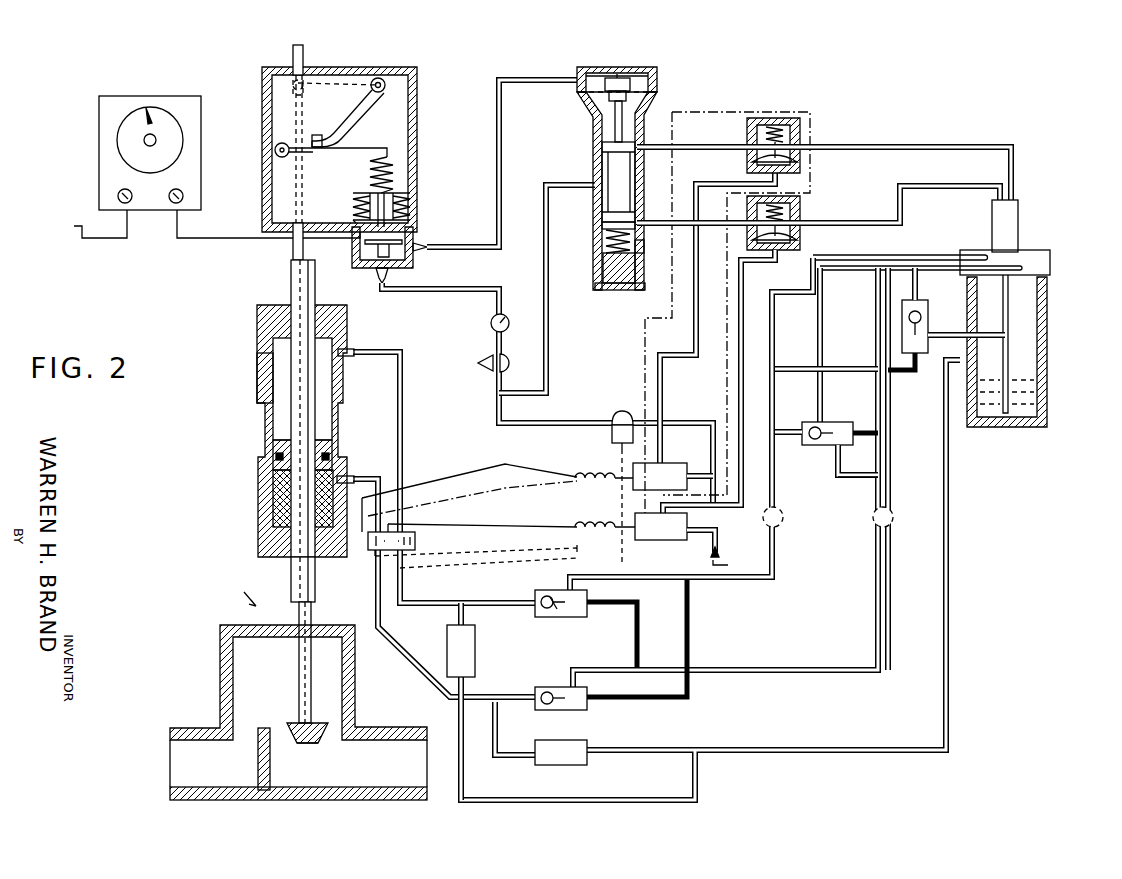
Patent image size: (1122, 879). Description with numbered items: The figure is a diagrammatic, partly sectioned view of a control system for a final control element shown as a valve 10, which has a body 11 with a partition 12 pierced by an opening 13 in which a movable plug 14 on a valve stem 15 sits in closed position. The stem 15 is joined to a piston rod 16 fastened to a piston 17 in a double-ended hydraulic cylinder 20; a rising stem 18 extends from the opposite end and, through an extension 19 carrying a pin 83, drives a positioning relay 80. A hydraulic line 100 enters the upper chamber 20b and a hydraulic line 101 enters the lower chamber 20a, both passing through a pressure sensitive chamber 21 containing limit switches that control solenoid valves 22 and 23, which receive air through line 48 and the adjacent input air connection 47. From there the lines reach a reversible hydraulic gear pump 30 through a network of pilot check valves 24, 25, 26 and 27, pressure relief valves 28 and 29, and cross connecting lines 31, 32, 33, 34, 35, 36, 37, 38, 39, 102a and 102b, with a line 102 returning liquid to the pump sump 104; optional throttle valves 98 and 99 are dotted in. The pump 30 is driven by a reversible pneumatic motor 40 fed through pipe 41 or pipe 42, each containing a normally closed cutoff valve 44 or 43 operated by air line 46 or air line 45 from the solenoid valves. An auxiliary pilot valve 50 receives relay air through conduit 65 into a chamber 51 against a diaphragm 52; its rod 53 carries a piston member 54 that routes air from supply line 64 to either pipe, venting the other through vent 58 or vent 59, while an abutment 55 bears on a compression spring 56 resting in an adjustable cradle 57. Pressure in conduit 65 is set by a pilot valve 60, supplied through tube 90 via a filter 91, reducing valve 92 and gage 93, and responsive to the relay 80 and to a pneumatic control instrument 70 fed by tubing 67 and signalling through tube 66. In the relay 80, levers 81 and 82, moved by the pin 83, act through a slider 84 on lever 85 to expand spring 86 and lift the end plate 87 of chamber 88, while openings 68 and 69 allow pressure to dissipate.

The valve 10 is at (242, 591).
The body 11 is at (220, 630).
The partition 12 is at (264, 730).
The opening 13 is at (318, 742).
The movable plug 14 is at (305, 744).
The valve stem 15 is at (311, 624).
The piston rod 16 is at (315, 586).
The piston 17 is at (275, 450).
The rising stem 18 is at (291, 285).
The extension 19 is at (293, 254).
The hydraulic cylinder 20 is at (249, 327).
The lower cylinder chamber 20a is at (275, 478).
The upper cylinder chamber 20b is at (263, 378).
The pressure sensitive chamber 21 is at (416, 540).
The solenoid valve 22 is at (640, 541).
The solenoid valve 23 is at (612, 474).
The pilot check valve 24 is at (806, 424).
The pilot check valve 25 is at (906, 302).
The pilot check valve 26 is at (562, 618).
The pilot check valve 27 is at (542, 710).
The pressure relief valve 28 is at (447, 641).
The pressure relief valve 29 is at (535, 762).
The reversible hydraulic gear pump 30 is at (1050, 264).
The cross connecting line 31 is at (918, 286).
The cross connecting line 32 is at (938, 335).
The cross connecting line 33 is at (830, 369).
The cross connecting line 34 is at (788, 437).
The cross connecting line 35 is at (858, 460).
The cross connecting line 36 is at (850, 478).
The cross connecting line 37 is at (690, 600).
The cross connecting line 38 is at (640, 629).
The cross connecting line 39 is at (466, 621).
The reversible pneumatic motor 40 is at (1018, 222).
The pipe 41 is at (857, 145).
The pipe 42 is at (848, 222).
The cutoff valve 43 is at (800, 205).
The cutoff valve 44 is at (800, 123).
The air line 45 is at (738, 375).
The air line 46 is at (668, 462).
The air inlet line 47 is at (697, 532).
The line 48 is at (703, 473).
The auxiliary pilot valve 50 is at (593, 132).
The chamber 51 is at (592, 72).
The diaphragm 52 is at (632, 78).
The rod 53 is at (623, 120).
The piston member 54 is at (628, 184).
The abutment 55 is at (602, 232).
The compression spring 56 is at (604, 246).
The adjustable cradle 57 is at (603, 277).
The vent 58 is at (644, 246).
The vent 59 is at (655, 95).
The pilot valve 60 is at (414, 239).
The supply line 64 is at (548, 183).
The conduit 65 is at (497, 104).
The tube 66 is at (250, 238).
The tubing 67 is at (82, 226).
The opening 68 is at (355, 212).
The opening 69 is at (353, 198).
The pneumatic control instrument 70 is at (172, 96).
The positioning relay 80 is at (418, 86).
The lever 81 is at (330, 80).
The lever 82 is at (386, 98).
The pin 83 is at (293, 64).
The slider 84 is at (320, 148).
The lever 85 is at (300, 153).
The spring 86 is at (394, 158).
The end plate 87 is at (410, 196).
The chamber 88 is at (410, 210).
The tube 90 is at (466, 289).
The filter 91 is at (618, 412).
The reducing valve 92 is at (478, 361).
The gage 93 is at (490, 323).
The throttle valve 98 is at (783, 523).
The throttle valve 99 is at (892, 523).
The hydraulic line 100 is at (776, 344).
The hydraulic line 101 is at (876, 323).
The line 102 is at (950, 456).
The cross connecting line 102a is at (499, 724).
The cross connecting line 102b is at (458, 713).
The pump sump 104 is at (1047, 397).